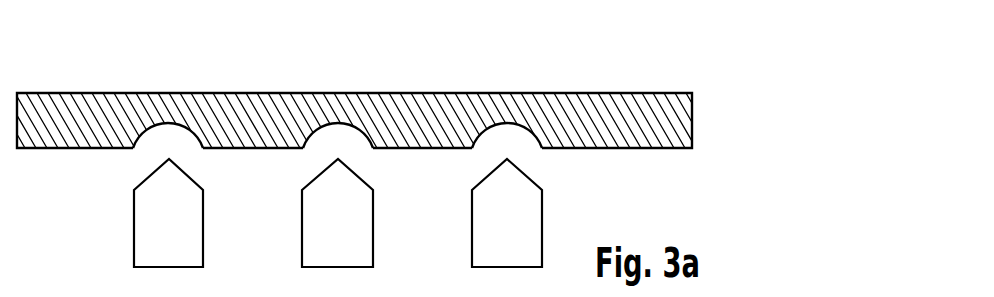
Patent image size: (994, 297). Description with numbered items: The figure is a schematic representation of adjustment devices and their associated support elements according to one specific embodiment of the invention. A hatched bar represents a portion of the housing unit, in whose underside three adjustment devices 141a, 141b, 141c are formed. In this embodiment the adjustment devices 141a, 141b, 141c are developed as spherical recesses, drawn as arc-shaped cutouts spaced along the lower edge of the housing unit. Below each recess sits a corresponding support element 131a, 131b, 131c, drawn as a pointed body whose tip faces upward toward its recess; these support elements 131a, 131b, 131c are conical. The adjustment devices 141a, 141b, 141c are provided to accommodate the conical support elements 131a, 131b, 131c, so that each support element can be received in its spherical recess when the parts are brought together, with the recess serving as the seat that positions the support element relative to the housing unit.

The adjustment device 141a is at (182, 126).
The adjustment device 141b is at (351, 126).
The adjustment device 141c is at (520, 126).
The support element 131a is at (150, 217).
The support element 131b is at (318, 217).
The support element 131c is at (488, 217).